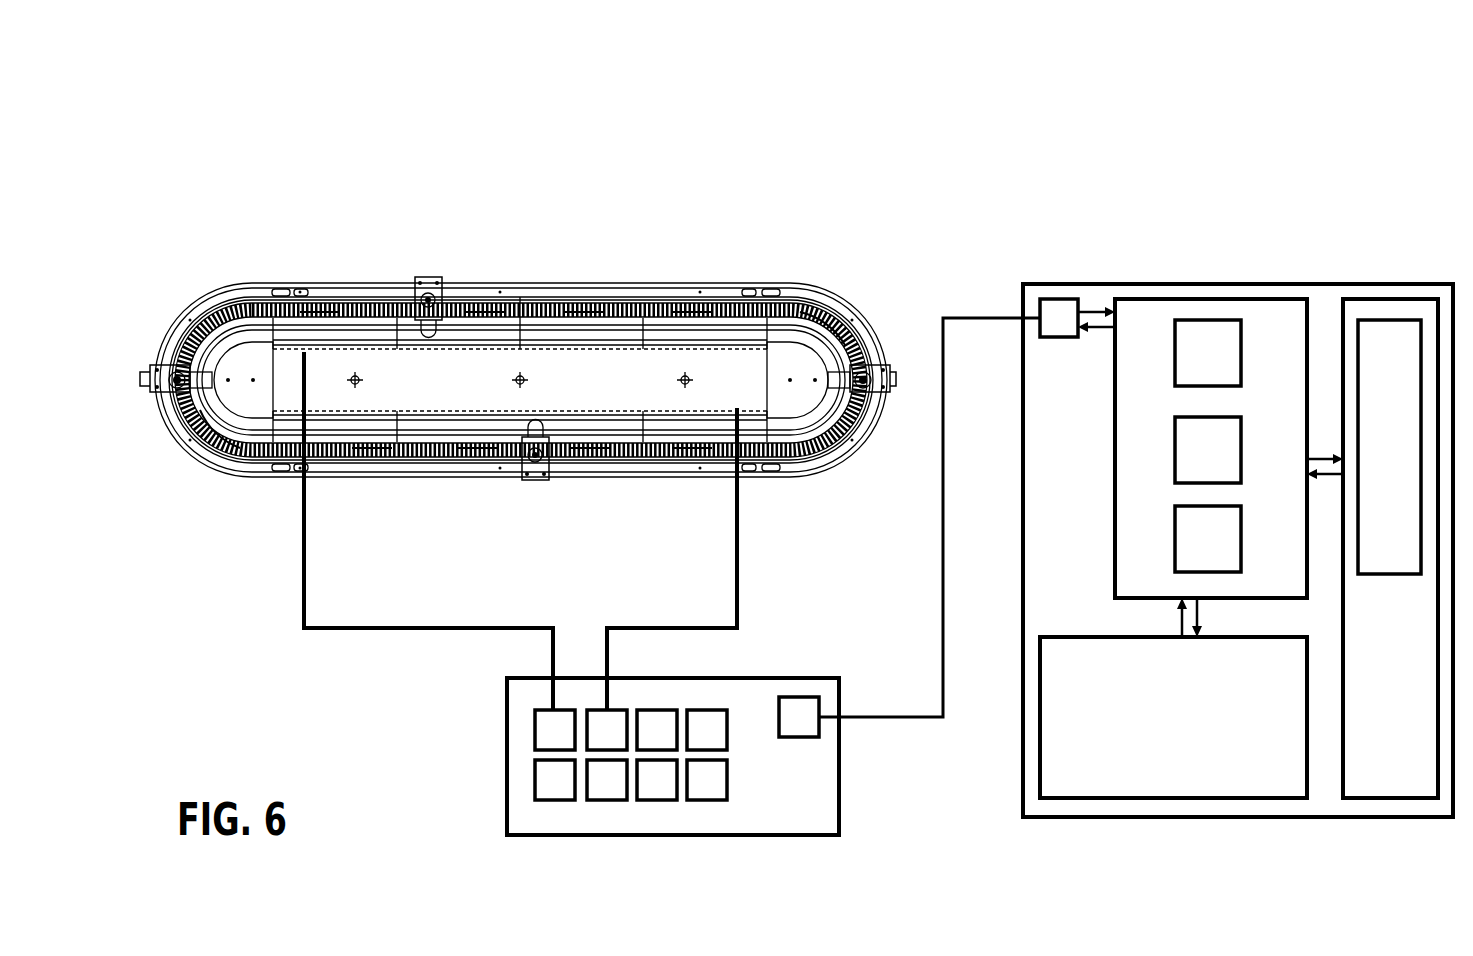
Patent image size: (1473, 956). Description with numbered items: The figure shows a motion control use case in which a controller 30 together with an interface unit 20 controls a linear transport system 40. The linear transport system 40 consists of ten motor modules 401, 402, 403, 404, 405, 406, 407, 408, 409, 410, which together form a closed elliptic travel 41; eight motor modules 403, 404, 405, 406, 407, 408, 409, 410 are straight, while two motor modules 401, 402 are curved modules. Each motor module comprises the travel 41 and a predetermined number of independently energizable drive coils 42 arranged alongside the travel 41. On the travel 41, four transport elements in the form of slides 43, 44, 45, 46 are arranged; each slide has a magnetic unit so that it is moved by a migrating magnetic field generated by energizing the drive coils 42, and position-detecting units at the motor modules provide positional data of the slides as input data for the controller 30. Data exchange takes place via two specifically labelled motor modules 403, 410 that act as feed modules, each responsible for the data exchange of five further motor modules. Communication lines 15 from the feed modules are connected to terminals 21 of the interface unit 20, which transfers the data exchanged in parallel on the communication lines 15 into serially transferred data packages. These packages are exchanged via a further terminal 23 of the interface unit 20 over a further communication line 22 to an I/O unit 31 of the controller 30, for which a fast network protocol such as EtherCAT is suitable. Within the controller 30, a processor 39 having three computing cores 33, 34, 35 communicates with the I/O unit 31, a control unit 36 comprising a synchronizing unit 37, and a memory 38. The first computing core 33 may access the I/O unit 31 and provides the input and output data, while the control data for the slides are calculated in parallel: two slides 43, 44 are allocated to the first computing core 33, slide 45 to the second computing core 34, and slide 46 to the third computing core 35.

The communication lines 15 is at (347, 630).
The interface unit 20 is at (767, 817).
The terminals 21 is at (543, 741).
The further communication line 22 is at (953, 318).
The further terminal 23 is at (787, 728).
The controller 30 is at (1043, 406).
The I/O unit 31 is at (1047, 330).
The first computing core 33 is at (1194, 364).
The second computing core 34 is at (1194, 461).
The third computing core 35 is at (1194, 550).
The control unit 36 is at (1376, 691).
The synchronizing unit 37 is at (1376, 456).
The memory 38 is at (1159, 729).
The processor 39 is at (1131, 406).
The linear transport system 40 is at (764, 210).
The travel 41 is at (200, 292).
The drive coils 42 is at (833, 440).
The slide 43 is at (150, 390).
The slide 44 is at (423, 277).
The slide 45 is at (890, 365).
The slide 46 is at (537, 481).
The motor module 401 is at (220, 418).
The motor module 402 is at (828, 325).
The motor module 403 is at (318, 335).
The motor module 404 is at (485, 330).
The motor module 405 is at (585, 330).
The motor module 406 is at (692, 330).
The motor module 407 is at (372, 430).
The motor module 408 is at (477, 430).
The motor module 409 is at (590, 430).
The motor module 410 is at (692, 427).